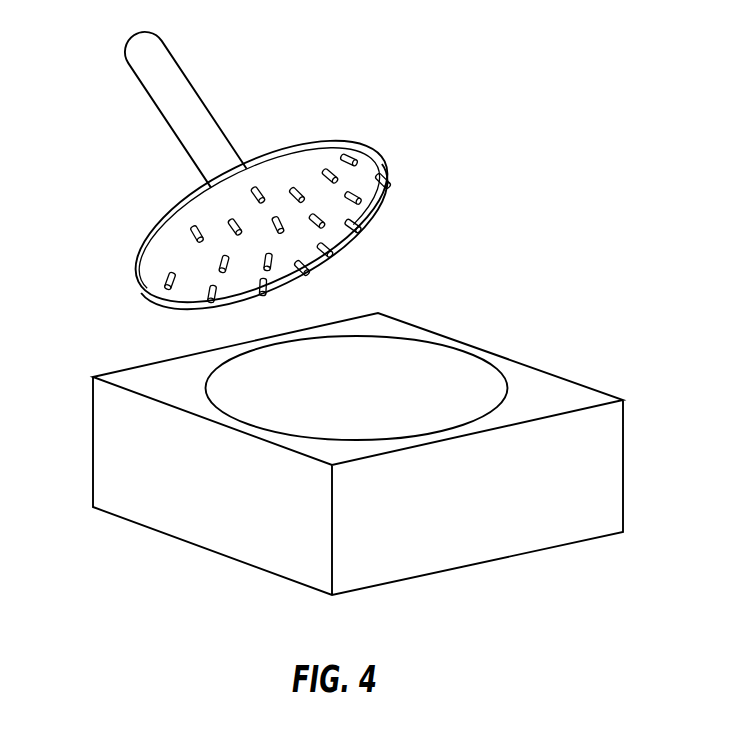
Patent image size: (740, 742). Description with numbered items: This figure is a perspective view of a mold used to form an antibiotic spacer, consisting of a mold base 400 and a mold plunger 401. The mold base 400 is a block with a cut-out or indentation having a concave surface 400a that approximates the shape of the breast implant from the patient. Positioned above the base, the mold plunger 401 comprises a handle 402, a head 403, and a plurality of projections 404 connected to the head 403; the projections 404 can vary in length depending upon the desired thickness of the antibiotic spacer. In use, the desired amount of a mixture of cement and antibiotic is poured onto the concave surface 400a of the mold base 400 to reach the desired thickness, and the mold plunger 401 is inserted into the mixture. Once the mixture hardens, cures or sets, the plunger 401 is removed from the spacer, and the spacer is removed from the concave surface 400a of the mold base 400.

The mold base 400 is at (323, 439).
The concave surface 400a is at (437, 365).
The mold plunger 401 is at (268, 188).
The handle 402 is at (150, 80).
The head 403 is at (150, 290).
The projections 404 is at (193, 230).